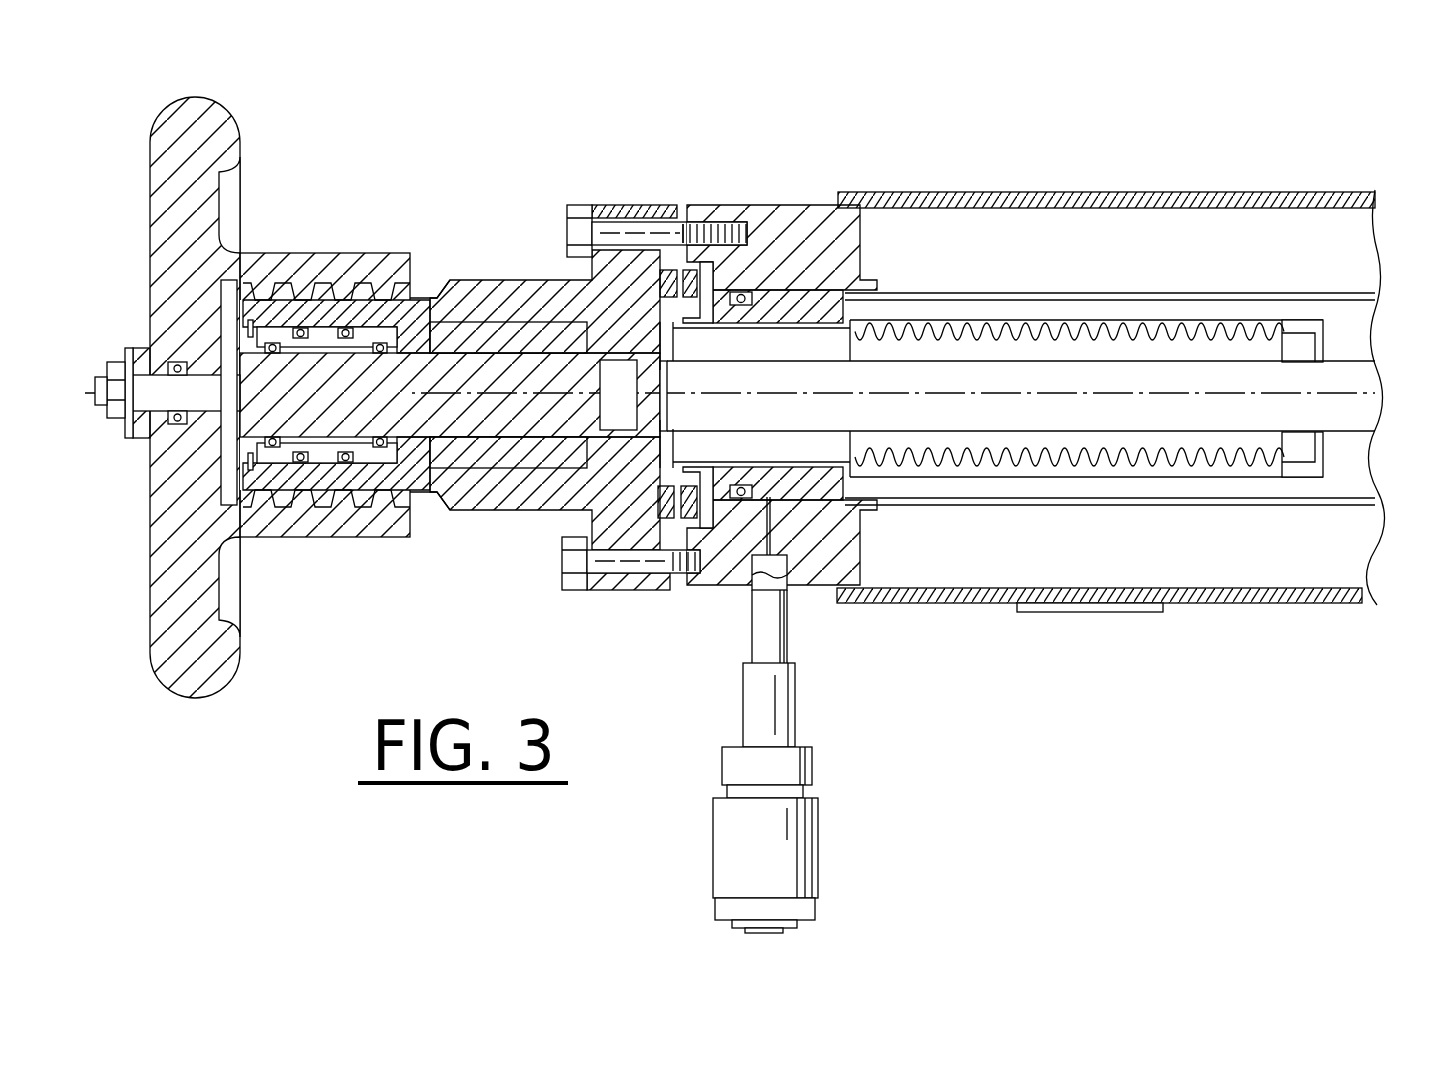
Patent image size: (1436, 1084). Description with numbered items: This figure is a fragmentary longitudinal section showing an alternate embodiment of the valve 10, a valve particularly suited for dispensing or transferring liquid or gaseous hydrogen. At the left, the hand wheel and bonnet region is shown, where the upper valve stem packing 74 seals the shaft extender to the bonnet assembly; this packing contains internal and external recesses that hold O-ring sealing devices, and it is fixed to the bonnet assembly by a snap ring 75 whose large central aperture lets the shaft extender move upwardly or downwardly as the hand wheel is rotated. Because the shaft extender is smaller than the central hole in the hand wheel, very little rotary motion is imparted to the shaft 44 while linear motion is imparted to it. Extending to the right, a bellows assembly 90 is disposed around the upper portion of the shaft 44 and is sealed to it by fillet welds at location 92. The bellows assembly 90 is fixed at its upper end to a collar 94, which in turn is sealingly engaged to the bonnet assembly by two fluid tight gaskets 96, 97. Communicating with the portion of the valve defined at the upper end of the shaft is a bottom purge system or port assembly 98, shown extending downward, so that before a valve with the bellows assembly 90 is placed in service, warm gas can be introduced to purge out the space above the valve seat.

The valve 10 is at (856, 168).
The shaft 44 is at (955, 370).
The upper valve stem packing 74 is at (352, 330).
The snap ring 75 is at (258, 345).
The bellows assembly 90 is at (1210, 465).
The fillet weld location 92 is at (1328, 430).
The collar 94 is at (843, 503).
The fluid tight gasket 96 is at (710, 525).
The fluid tight gasket 97 is at (655, 590).
The port assembly 98 is at (788, 622).